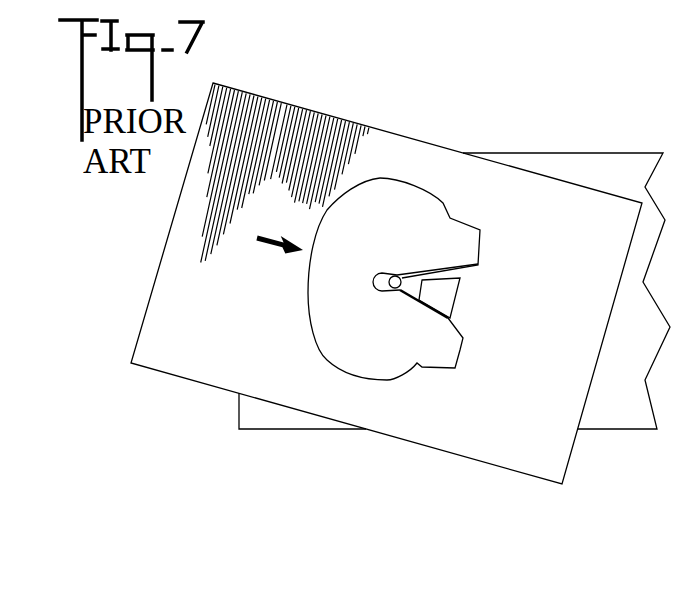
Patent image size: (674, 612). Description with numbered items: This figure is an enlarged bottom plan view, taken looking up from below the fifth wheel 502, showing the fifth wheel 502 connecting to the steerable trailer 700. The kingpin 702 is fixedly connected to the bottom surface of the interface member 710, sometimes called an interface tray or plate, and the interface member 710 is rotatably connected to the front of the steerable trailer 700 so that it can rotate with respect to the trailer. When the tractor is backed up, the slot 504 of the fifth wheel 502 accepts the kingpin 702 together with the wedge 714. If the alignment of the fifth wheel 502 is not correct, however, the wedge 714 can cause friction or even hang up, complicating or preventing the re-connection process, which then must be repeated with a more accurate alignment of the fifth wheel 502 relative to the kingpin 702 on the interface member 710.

The steerable trailer 700 is at (597, 175).
The interface member 710 is at (197, 348).
The fifth wheel 502 is at (337, 252).
The slot 504 is at (416, 286).
The kingpin 702 is at (395, 276).
The wedge 714 is at (445, 297).